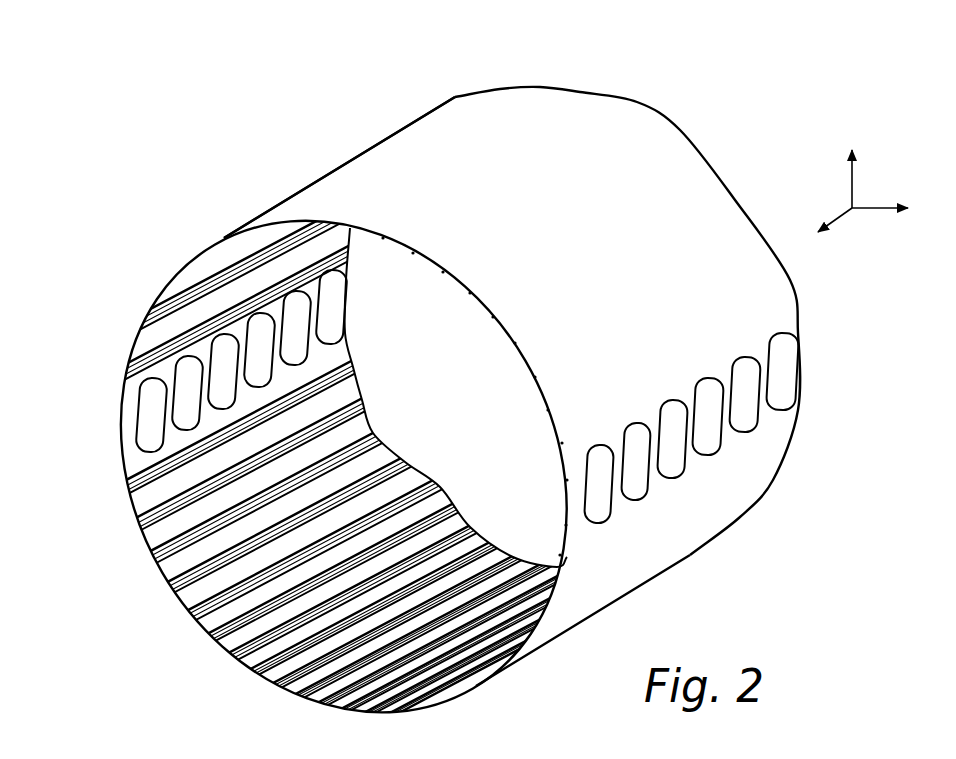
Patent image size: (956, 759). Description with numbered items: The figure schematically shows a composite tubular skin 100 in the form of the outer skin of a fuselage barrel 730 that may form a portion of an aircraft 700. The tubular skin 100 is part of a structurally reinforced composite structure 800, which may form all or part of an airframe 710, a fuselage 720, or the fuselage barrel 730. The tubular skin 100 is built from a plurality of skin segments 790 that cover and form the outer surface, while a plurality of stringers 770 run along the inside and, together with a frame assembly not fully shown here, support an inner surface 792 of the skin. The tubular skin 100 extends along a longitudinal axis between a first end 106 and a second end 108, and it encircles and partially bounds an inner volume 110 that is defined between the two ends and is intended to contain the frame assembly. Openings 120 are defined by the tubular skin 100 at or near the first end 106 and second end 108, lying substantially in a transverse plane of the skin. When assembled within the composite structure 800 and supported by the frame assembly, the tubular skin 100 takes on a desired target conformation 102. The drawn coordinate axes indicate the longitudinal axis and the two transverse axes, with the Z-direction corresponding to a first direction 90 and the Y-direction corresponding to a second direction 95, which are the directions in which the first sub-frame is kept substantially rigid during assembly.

The first direction 90 is at (851, 172).
The second direction 95 is at (882, 212).
The composite tubular skin 100 is at (212, 175).
The target conformation 102 is at (370, 86).
The first end 106 is at (574, 549).
The second end 108 is at (638, 99).
The inner volume 110 is at (436, 306).
The openings 120 is at (680, 130).
The aircraft 700 is at (93, 123).
The airframe 710 is at (93, 251).
The fuselage 720 is at (93, 314).
The fuselage barrel 730 is at (300, 113).
The stringers 770 is at (270, 650).
The skin segments 790 is at (643, 545).
The inner surface 792 is at (192, 556).
The structurally reinforced composite structure 800 is at (93, 187).